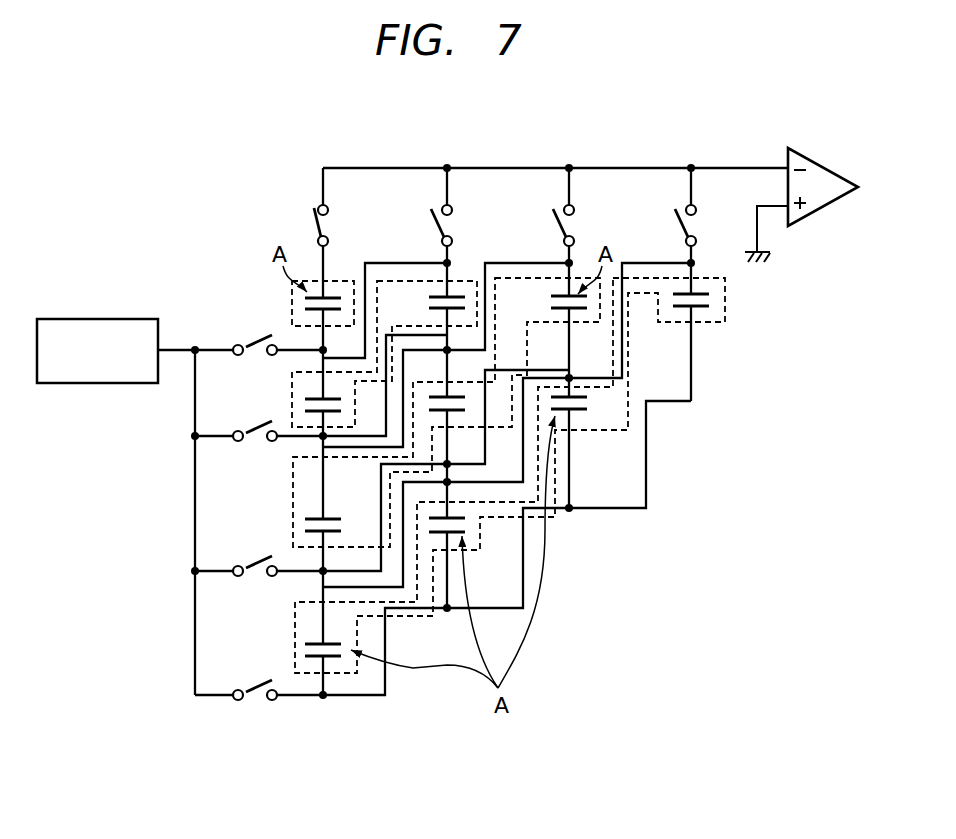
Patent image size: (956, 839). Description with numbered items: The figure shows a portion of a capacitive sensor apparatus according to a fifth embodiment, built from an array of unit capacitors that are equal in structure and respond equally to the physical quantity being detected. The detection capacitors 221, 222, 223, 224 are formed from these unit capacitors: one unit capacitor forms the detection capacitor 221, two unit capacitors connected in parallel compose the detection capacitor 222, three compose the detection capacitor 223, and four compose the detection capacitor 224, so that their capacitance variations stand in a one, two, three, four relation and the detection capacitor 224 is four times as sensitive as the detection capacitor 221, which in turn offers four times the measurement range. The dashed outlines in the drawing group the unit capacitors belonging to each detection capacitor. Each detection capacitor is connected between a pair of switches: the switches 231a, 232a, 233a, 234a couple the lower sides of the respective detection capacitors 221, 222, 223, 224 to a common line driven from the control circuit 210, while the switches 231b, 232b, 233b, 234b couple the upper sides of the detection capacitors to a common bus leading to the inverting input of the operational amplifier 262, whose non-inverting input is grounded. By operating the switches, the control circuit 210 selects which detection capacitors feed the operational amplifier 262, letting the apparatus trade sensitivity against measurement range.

The control circuit 210 is at (112, 318).
The detection capacitor 221 is at (292, 300).
The detection capacitor 222 is at (290, 410).
The detection capacitor 223 is at (290, 524).
The detection capacitor 224 is at (294, 655).
The switch 231a is at (252, 360).
The switch 232a is at (252, 446).
The switch 233a is at (253, 580).
The switch 234a is at (255, 705).
The switch 231b is at (306, 227).
The switch 232b is at (430, 226).
The switch 233b is at (553, 226).
The switch 234b is at (675, 226).
The operational amplifier 262 is at (826, 211).